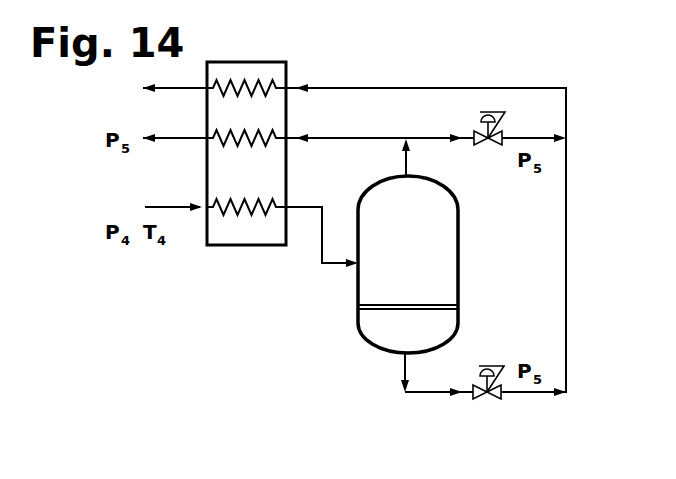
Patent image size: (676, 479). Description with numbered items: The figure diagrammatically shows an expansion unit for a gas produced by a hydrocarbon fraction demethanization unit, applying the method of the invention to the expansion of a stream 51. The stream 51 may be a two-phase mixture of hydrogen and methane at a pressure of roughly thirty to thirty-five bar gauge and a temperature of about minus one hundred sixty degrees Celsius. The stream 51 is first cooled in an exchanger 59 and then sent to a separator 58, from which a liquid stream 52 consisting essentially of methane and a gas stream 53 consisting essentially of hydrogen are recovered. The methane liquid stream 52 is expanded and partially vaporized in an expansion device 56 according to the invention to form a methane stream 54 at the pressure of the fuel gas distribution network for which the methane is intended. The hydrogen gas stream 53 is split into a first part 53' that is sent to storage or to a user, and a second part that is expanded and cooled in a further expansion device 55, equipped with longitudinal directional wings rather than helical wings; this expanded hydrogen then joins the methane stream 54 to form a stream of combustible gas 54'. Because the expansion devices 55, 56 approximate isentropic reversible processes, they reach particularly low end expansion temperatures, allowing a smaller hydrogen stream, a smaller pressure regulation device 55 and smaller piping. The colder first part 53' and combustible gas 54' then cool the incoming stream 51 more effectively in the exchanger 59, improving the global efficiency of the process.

The stream 51 is at (173, 207).
The liquid stream 52 is at (418, 392).
The gas stream 53 is at (375, 158).
The first part 53' is at (274, 122).
The methane stream 54 is at (563, 267).
The stream of combustible gas 54' is at (384, 104).
The further expansion device 55 is at (505, 112).
The expansion device 56 is at (487, 392).
The separator 58 is at (358, 318).
The exchanger 59 is at (247, 246).